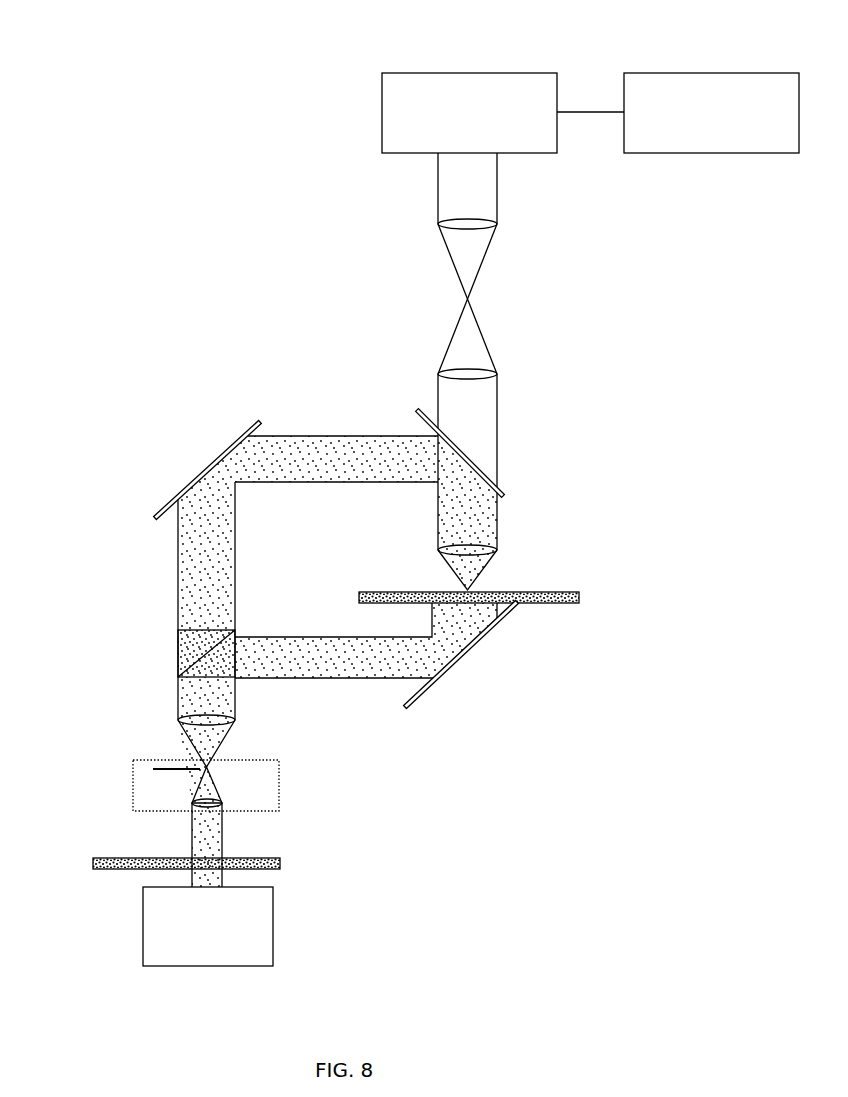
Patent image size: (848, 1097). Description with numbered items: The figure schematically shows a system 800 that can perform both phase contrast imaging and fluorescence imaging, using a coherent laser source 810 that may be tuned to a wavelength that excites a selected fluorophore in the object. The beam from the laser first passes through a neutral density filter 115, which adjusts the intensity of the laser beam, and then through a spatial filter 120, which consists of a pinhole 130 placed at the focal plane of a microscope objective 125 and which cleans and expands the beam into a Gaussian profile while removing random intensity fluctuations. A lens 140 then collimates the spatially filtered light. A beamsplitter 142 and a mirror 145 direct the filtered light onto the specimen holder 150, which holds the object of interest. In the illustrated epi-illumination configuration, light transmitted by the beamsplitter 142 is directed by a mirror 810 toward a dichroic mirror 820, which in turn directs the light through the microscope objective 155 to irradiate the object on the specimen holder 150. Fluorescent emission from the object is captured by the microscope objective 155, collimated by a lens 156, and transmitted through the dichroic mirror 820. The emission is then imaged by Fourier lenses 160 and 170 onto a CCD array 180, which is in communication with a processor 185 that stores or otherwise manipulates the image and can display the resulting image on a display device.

The system 800 is at (146, 78).
The CCD array 180 is at (449, 132).
The processor 185 is at (731, 132).
The Fourier lens 170 is at (497, 223).
The Fourier lens 160 is at (497, 374).
The dichroic mirror 820 is at (462, 452).
The mirror 810 is at (228, 947).
The lens 156 is at (497, 550).
The microscope objective 155 is at (487, 565).
The specimen holder 150 is at (579, 597).
The mirror 145 is at (473, 653).
The beamsplitter 142 is at (178, 647).
The lens 140 is at (178, 720).
The pinhole 130 is at (220, 768).
The microscope objective 125 is at (222, 803).
The spatial filter 120 is at (147, 787).
The neutral density filter 115 is at (280, 863).